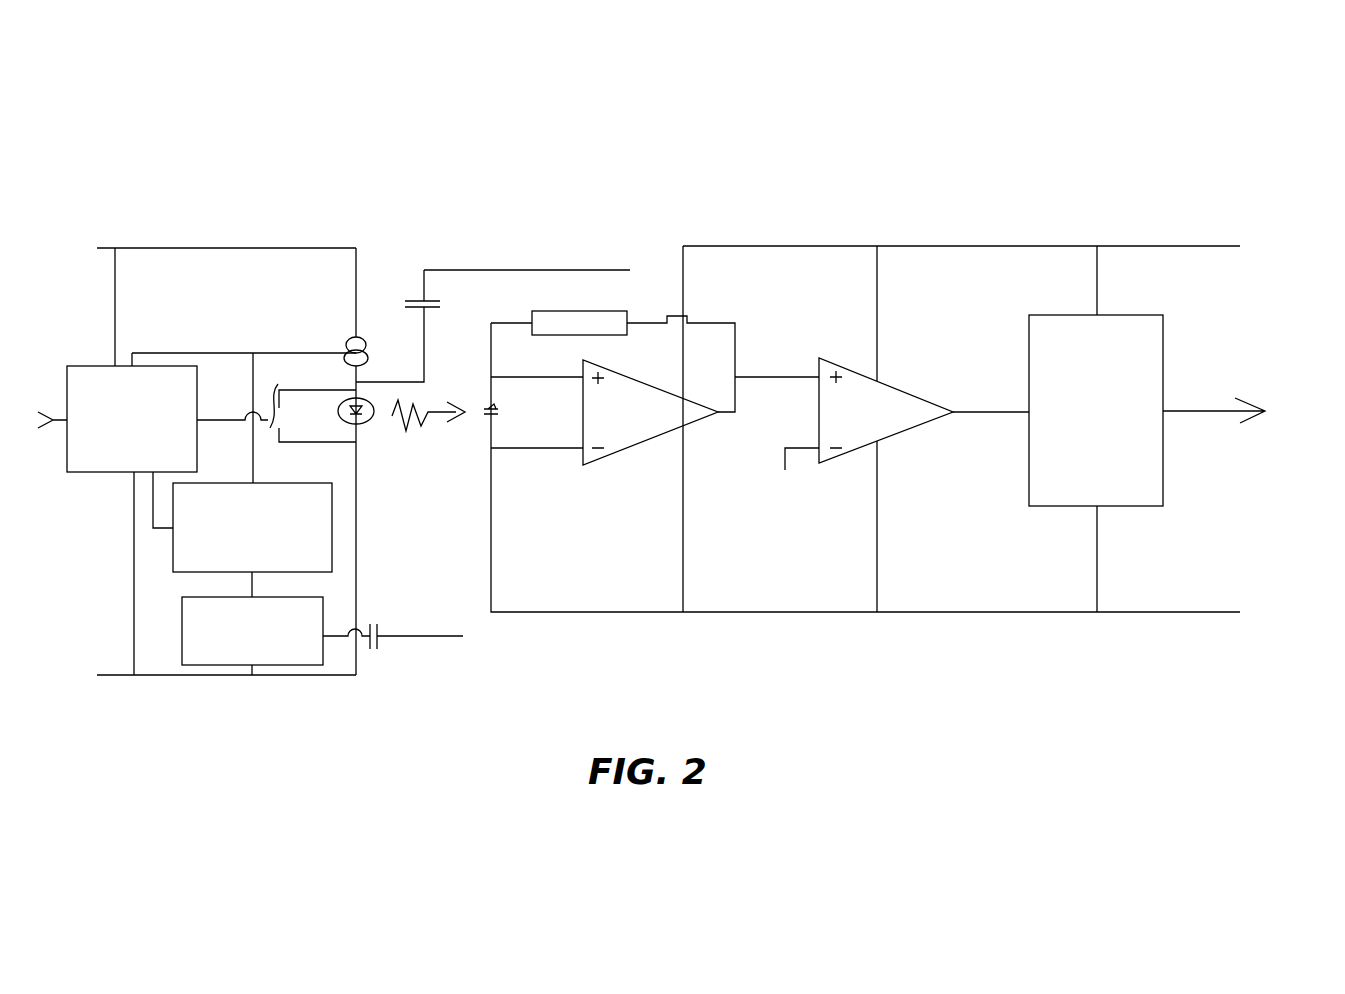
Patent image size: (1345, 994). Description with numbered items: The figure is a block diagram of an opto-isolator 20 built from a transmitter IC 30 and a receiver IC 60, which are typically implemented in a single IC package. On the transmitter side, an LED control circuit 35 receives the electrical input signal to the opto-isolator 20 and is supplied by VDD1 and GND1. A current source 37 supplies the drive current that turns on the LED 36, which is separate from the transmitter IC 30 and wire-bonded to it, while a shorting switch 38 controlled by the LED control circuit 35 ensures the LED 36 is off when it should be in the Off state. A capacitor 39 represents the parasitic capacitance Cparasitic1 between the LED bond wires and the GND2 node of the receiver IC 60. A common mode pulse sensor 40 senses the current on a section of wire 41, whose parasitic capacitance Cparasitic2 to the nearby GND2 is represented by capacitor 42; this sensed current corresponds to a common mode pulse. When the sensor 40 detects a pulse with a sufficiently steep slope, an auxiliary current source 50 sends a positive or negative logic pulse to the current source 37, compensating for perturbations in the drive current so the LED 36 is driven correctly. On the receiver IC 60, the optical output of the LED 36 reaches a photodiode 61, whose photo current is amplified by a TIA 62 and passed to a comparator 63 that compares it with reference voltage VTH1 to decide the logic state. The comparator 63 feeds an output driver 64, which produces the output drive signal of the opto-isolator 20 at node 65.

The opto-isolator 20 is at (265, 168).
The transmitter IC 30 is at (373, 268).
The LED control circuit 35 is at (70, 366).
The LED 36 is at (368, 425).
The current source 37 is at (362, 337).
The shorting switch 38 is at (313, 402).
The capacitor 39 is at (411, 301).
The common mode pulse (CMP) sensor 40 is at (186, 597).
The wire 41 is at (440, 637).
The capacitor 42 is at (380, 622).
The auxiliary current source 50 is at (270, 483).
The receiver IC 60 is at (479, 461).
The photodiode 61 is at (500, 413).
The TIA 62 is at (645, 447).
The comparator 63 is at (905, 432).
The output driver 64 is at (1055, 507).
The node 65 is at (1200, 411).